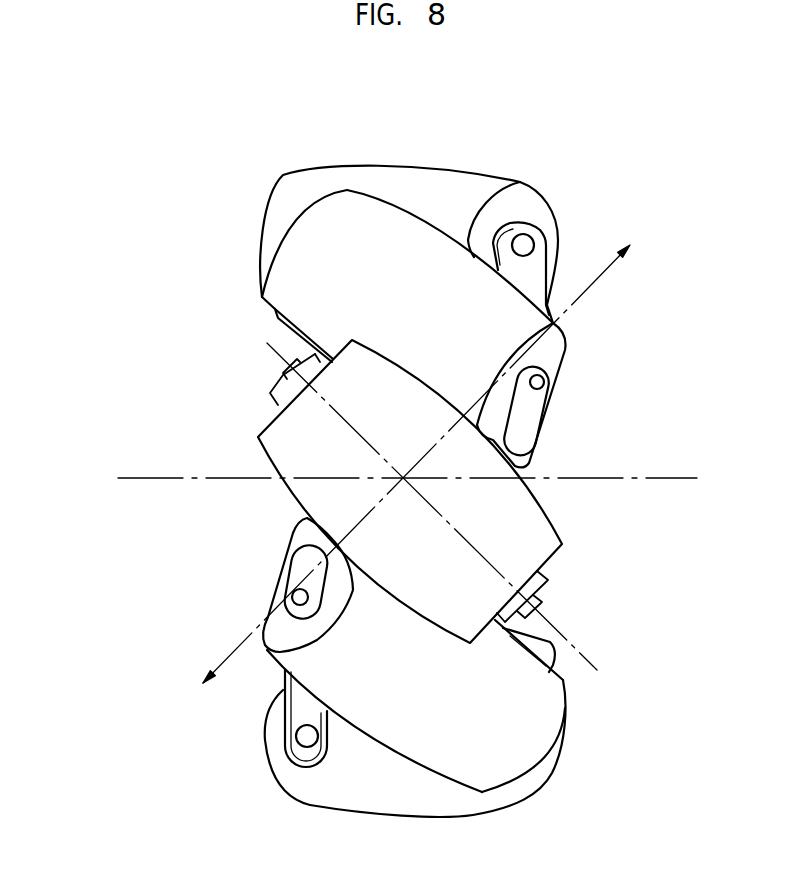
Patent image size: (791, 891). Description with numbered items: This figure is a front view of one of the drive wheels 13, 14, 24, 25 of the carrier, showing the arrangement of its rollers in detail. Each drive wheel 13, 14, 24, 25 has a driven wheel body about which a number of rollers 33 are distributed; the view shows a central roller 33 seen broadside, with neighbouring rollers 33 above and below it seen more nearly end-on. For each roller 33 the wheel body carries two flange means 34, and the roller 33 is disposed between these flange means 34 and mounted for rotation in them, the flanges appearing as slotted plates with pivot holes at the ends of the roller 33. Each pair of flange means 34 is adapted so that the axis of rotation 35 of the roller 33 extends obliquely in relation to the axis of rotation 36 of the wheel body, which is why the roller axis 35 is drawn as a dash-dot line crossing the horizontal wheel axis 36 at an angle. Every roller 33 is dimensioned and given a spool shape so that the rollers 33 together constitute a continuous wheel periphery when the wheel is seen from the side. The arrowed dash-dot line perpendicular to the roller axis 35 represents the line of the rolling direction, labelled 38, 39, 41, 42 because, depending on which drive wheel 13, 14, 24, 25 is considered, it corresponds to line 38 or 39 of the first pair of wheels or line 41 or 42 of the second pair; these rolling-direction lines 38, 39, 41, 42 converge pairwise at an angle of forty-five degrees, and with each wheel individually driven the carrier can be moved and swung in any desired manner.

The drive wheel 13 is at (494, 223).
The drive wheel 14 is at (494, 223).
The drive wheel 24 is at (494, 223).
The drive wheel 25 is at (555, 158).
The roller 33 is at (540, 538).
The flange means 34 is at (548, 590).
The axis of rotation of the roller 35 is at (590, 662).
The axis of rotation of the wheel body 36 is at (643, 478).
The line of rolling direction 38 is at (336, 464).
The line of rolling direction 39 is at (336, 464).
The line of rolling direction 41 is at (336, 464).
The line of rolling direction 42 is at (230, 657).